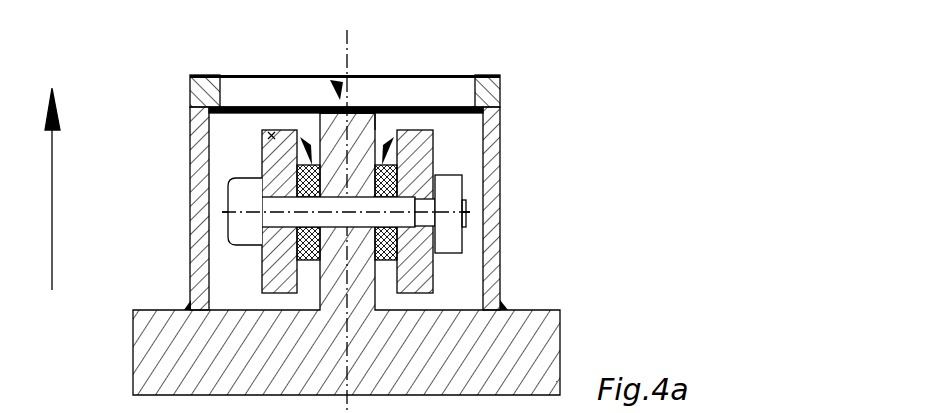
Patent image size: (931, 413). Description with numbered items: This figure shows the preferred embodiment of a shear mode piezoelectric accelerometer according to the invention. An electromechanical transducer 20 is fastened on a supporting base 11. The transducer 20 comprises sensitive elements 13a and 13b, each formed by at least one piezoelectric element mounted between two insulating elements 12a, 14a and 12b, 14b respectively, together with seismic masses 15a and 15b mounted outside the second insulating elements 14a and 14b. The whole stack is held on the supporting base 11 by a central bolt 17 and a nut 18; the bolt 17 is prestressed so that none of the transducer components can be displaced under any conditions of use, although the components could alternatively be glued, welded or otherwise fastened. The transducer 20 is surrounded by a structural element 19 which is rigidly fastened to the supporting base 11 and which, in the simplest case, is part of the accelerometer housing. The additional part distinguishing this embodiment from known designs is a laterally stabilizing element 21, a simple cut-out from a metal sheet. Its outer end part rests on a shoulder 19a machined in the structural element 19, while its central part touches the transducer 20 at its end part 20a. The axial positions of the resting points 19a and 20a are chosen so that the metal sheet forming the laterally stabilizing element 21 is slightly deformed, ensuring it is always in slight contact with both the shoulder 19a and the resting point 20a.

The supporting base 11 is at (525, 332).
The insulating element 12a is at (297, 166).
The insulating element 12b is at (433, 165).
The sensitive element 13a is at (302, 138).
The sensitive element 13b is at (392, 138).
The second insulating element 14a is at (308, 187).
The second insulating element 14b is at (433, 188).
The seismic mass 15a is at (232, 75).
The seismic mass 15b is at (498, 87).
The central bolt 17 is at (240, 220).
The nut 18 is at (455, 243).
The structural element 19 is at (195, 268).
The shoulder 19a is at (190, 95).
The electromechanical transducer 20 is at (333, 73).
The end part 20a is at (375, 103).
The laterally stabilizing element 21 is at (445, 103).